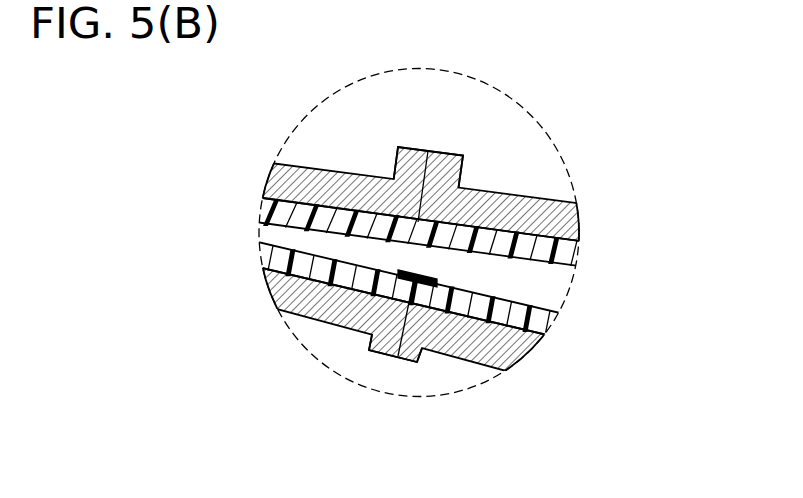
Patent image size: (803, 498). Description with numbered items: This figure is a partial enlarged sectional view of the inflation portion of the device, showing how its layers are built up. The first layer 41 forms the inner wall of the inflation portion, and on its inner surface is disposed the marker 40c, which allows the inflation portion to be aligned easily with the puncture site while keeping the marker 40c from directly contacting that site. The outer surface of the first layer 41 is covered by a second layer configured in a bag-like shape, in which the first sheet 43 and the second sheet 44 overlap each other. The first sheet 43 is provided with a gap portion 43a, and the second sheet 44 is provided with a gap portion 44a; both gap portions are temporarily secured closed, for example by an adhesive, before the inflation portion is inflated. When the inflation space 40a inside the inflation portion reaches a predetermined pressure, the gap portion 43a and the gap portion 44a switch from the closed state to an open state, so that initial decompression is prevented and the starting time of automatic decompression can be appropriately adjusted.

The inflation space 40a is at (328, 249).
The marker 40c is at (412, 276).
The first layer 41 is at (540, 327).
The first sheet 43 is at (575, 218).
The gap portion 43a is at (465, 175).
The second sheet 44 is at (525, 350).
The gap portion 44a is at (393, 325).